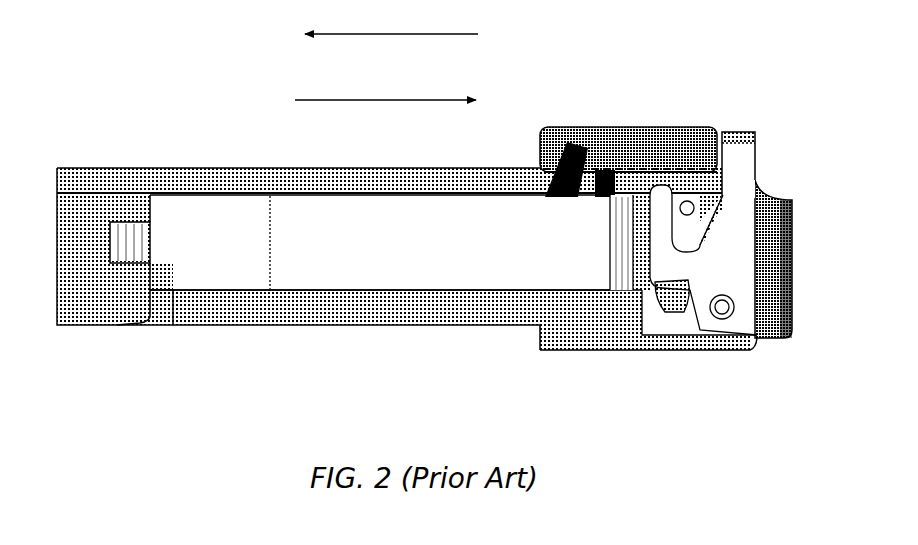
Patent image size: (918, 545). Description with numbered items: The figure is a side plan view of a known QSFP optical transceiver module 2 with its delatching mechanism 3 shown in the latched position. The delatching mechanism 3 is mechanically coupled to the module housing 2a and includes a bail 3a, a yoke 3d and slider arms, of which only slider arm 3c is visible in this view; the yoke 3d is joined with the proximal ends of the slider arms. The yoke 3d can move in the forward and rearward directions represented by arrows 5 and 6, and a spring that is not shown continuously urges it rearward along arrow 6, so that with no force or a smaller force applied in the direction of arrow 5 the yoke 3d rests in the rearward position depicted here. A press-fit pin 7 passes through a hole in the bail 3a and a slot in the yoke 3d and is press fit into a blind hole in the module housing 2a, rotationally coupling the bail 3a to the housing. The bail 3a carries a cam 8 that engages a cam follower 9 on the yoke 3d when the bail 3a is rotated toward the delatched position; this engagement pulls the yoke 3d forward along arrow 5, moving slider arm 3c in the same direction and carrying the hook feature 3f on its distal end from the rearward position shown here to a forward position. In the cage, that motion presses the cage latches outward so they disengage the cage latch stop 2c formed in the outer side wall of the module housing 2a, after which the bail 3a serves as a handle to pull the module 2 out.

The QSFP optical transceiver module 2 is at (382, 189).
The module housing 2a is at (268, 168).
The cage latch stop 2c is at (113, 250).
The delatching mechanism 3 is at (666, 255).
The bail 3a is at (736, 130).
The slider arm 3c is at (353, 264).
The yoke 3d is at (731, 347).
The hook feature 3f is at (128, 245).
The forward direction arrow 5 is at (387, 100).
The rearward direction arrow 6 is at (387, 34).
The press-fit pin 7 is at (724, 308).
The cam 8 is at (662, 298).
The cam follower 9 is at (690, 248).